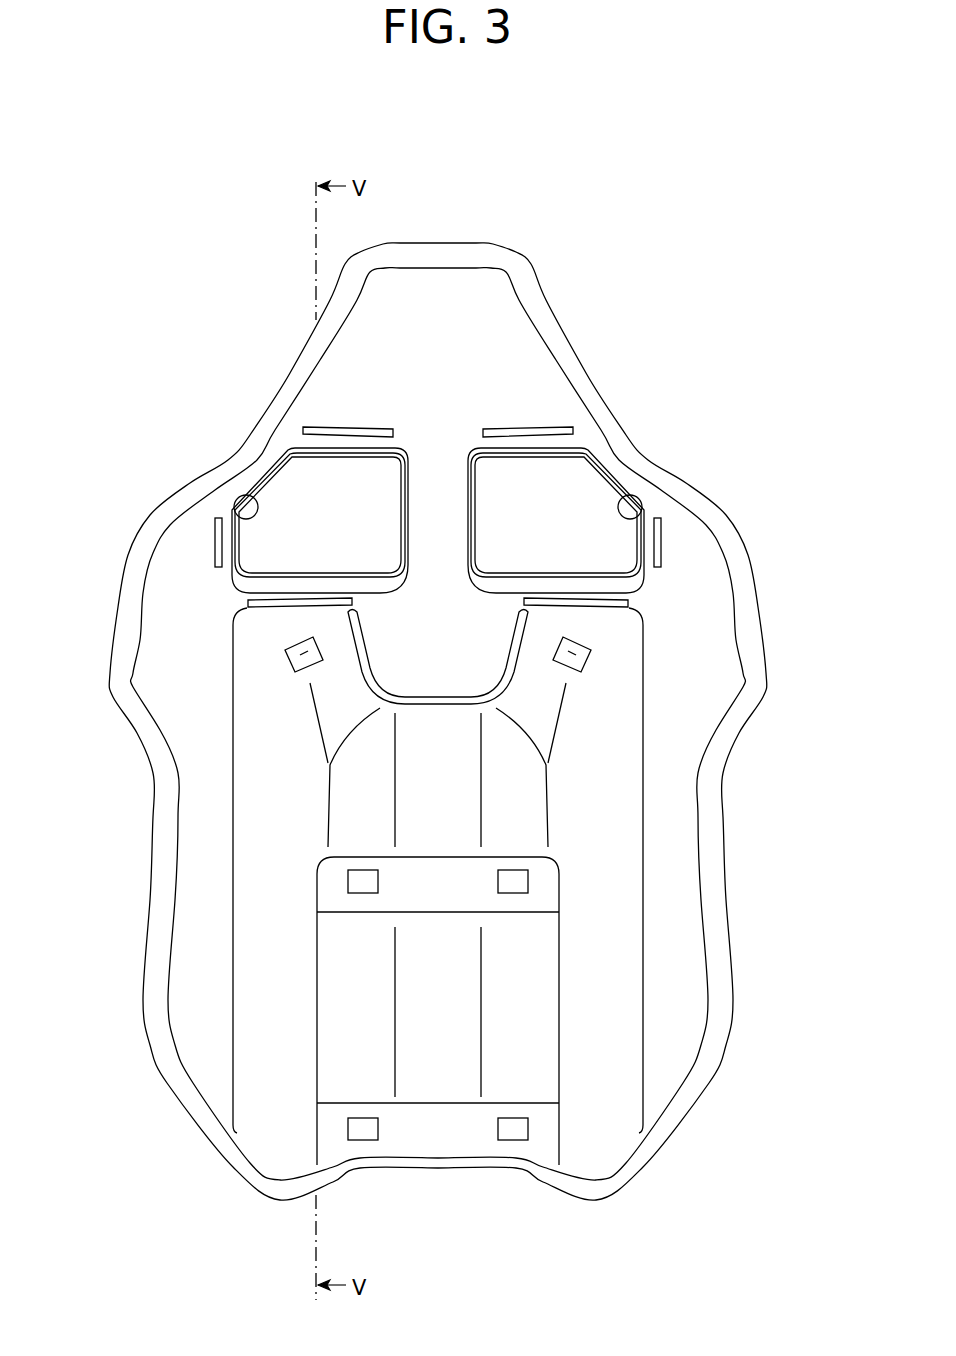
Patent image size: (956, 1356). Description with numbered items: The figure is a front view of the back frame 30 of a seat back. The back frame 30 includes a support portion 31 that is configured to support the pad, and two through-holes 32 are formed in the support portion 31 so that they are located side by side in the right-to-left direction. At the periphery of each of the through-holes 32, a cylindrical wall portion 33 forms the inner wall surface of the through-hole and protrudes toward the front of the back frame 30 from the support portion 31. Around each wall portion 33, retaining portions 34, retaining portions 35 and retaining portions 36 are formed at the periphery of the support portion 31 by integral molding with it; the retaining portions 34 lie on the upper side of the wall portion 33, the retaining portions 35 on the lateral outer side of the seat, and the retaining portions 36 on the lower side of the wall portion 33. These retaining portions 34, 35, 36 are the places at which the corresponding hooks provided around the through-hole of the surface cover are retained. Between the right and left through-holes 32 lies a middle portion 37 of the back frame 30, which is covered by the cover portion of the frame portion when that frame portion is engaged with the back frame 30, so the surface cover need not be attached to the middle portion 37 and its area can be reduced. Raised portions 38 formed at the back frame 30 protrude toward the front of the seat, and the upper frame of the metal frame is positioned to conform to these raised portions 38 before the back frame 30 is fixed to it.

The back frame 30 is at (731, 243).
The support portion 31 is at (488, 317).
The through-holes 32 is at (236, 518).
The cylindrical wall portion 33 is at (262, 474).
The retaining portions 34 is at (330, 427).
The retaining portions 35 is at (216, 546).
The retaining portions 36 is at (278, 609).
The middle portion 37 is at (438, 472).
The raised portions 38 is at (288, 664).